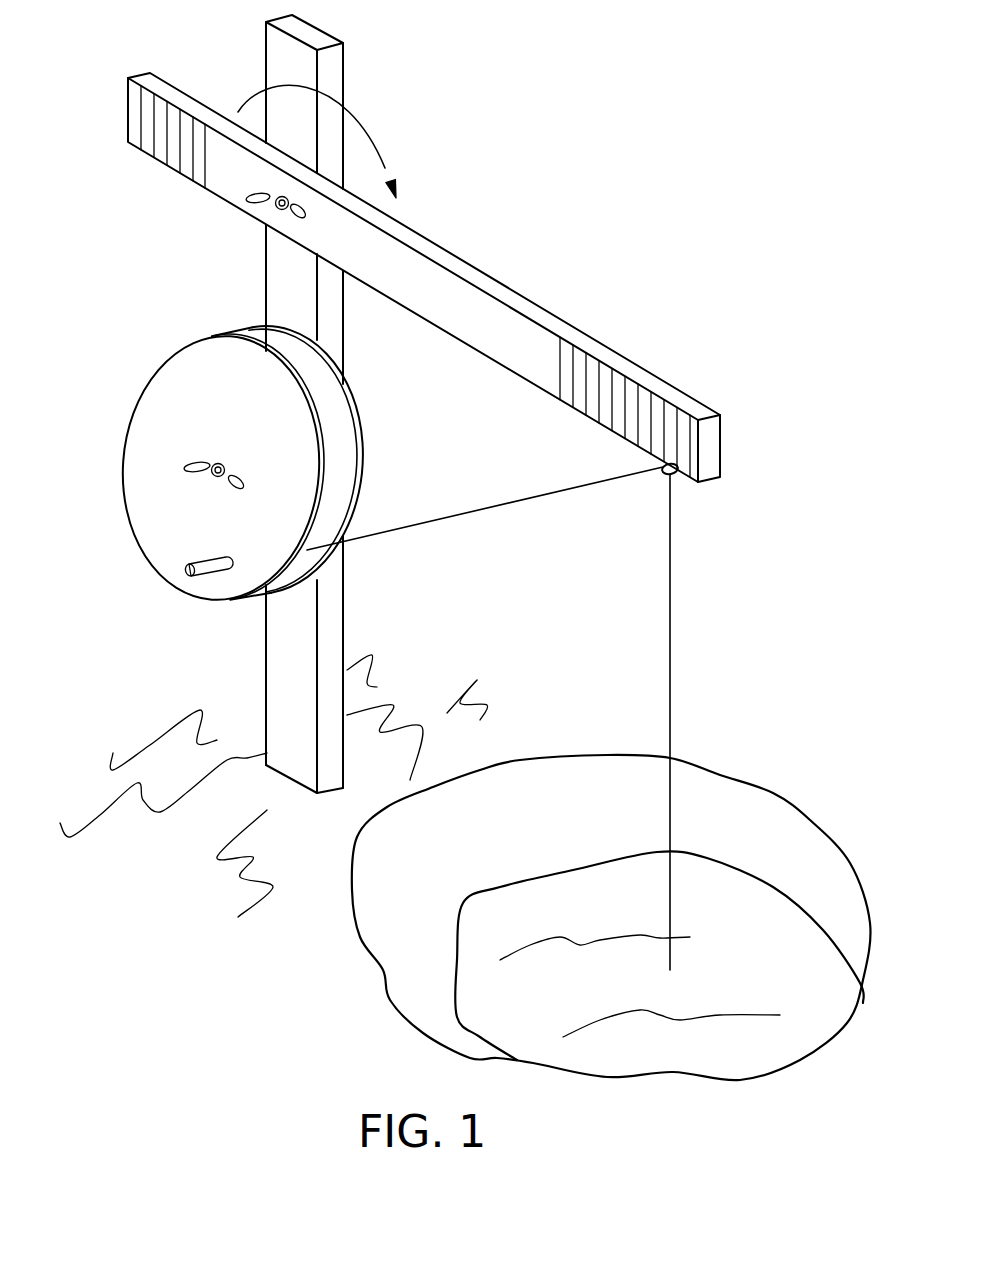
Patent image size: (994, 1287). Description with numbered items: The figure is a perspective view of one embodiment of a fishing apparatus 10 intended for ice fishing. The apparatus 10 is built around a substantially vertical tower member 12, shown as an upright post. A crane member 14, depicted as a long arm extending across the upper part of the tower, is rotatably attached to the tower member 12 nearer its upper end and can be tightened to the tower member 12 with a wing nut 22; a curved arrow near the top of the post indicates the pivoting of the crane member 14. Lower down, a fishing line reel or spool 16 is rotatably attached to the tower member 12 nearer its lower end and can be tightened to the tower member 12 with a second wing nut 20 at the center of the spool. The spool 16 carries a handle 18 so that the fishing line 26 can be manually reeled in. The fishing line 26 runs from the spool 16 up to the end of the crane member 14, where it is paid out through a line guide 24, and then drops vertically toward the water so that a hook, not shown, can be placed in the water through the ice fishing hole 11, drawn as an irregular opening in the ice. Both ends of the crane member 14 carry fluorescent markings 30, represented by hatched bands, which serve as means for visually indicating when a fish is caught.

The fishing apparatus 10 is at (584, 87).
The ice fishing hole 11 is at (738, 917).
The tower member 12 is at (336, 69).
The crane member 14 is at (473, 315).
The fishing line reel or spool 16 is at (170, 535).
The handle 18 is at (211, 570).
The wing nut 20 is at (195, 483).
The wing nut 22 is at (256, 209).
The line guide 24 is at (662, 470).
The fishing line 26 is at (487, 510).
The fluorescent markings 30 is at (150, 120).